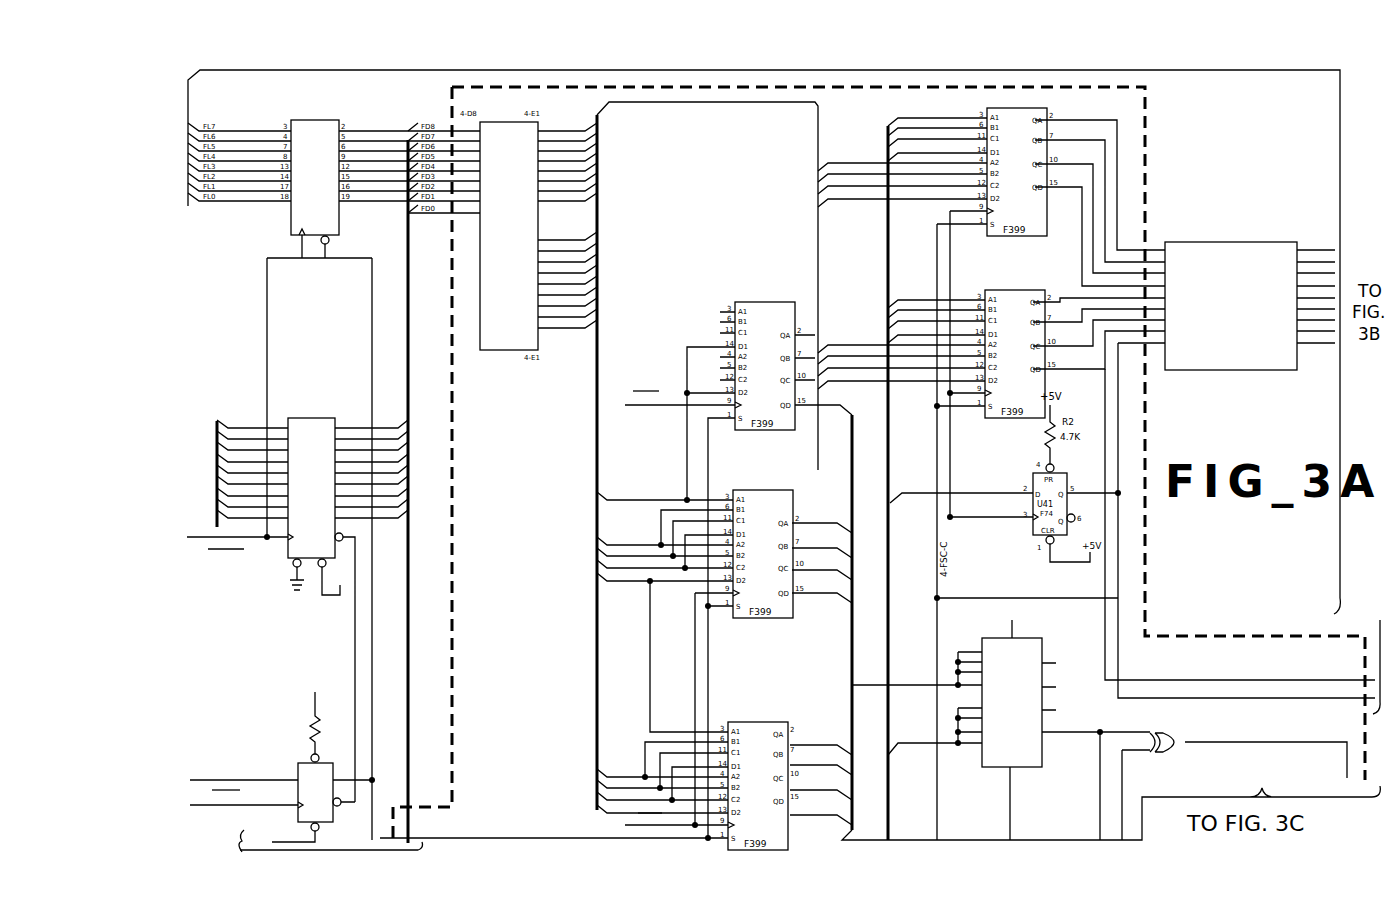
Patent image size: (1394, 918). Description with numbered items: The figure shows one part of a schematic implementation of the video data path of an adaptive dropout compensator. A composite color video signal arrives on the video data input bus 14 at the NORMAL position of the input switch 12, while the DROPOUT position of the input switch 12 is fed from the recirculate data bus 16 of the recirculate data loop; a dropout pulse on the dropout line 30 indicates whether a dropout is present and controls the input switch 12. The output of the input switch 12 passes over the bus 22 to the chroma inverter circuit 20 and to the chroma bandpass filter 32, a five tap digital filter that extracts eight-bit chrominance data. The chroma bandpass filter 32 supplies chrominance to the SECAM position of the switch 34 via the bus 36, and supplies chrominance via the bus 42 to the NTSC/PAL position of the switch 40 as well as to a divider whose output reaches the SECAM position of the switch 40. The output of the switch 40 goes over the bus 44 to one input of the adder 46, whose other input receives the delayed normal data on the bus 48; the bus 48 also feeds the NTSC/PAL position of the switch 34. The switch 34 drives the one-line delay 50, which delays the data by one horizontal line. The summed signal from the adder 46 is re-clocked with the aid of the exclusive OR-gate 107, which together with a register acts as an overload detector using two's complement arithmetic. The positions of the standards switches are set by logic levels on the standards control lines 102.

The input switch 12 is at (295, 380).
The video data input bus 14 is at (222, 428).
The recirculate data bus 16 is at (1165, 70).
The chroma inverter circuit 20 is at (442, 325).
The bus 22 is at (408, 548).
The dropout line 30 is at (192, 780).
The chroma bandpass filter 32 is at (486, 355).
The switch 34 is at (1010, 233).
The bus 36 is at (648, 100).
The switch 40 is at (768, 430).
The bus 42 is at (596, 584).
The bus 44 is at (870, 803).
The adder 46 is at (1030, 767).
The bus 48 is at (884, 828).
The one-line (1H) delay 50 is at (1221, 236).
The standards control lines 102 is at (1295, 680).
The exclusive OR-gate 107 is at (1168, 731).